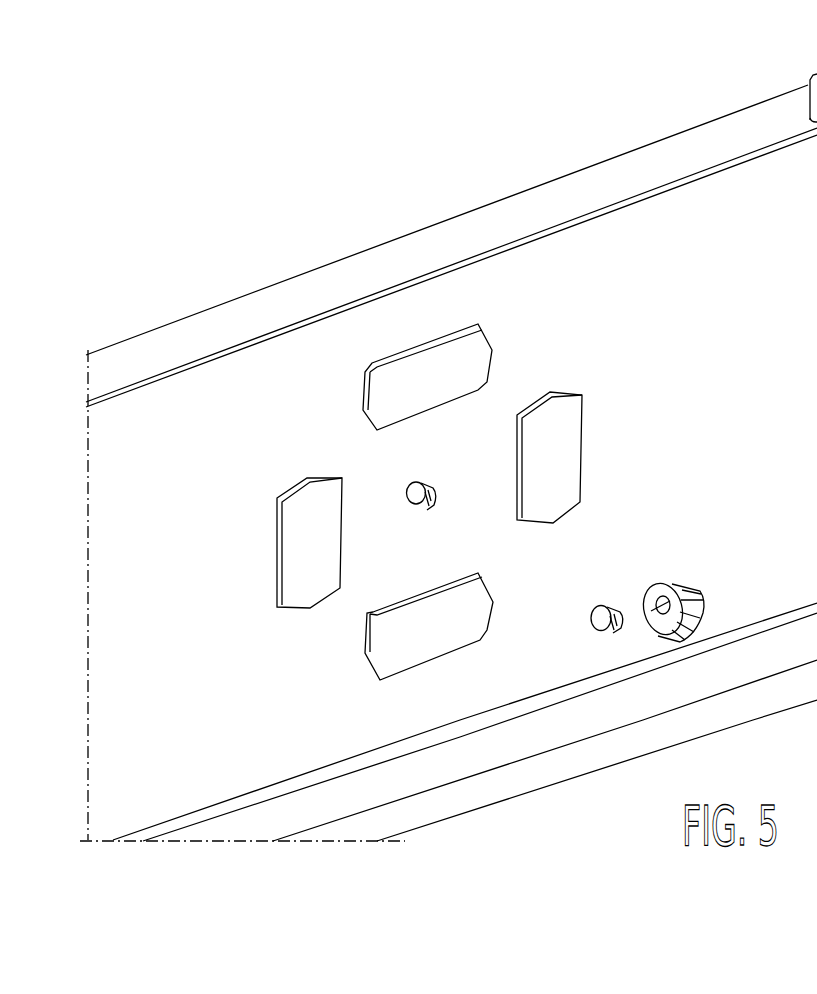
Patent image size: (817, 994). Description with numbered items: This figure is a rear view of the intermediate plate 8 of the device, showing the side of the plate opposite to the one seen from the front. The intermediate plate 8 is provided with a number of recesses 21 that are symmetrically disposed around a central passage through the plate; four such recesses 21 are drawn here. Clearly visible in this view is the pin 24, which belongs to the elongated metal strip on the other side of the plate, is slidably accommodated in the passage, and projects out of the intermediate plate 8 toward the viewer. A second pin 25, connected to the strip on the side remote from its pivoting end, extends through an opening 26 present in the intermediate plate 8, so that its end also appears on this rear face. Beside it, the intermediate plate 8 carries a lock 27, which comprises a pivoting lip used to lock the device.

The intermediate plate 8 is at (465, 192).
The recesses 21 is at (473, 347).
The pin 24 is at (417, 481).
The pin 25 is at (602, 606).
The opening 26 is at (607, 646).
The lock 27 is at (672, 589).